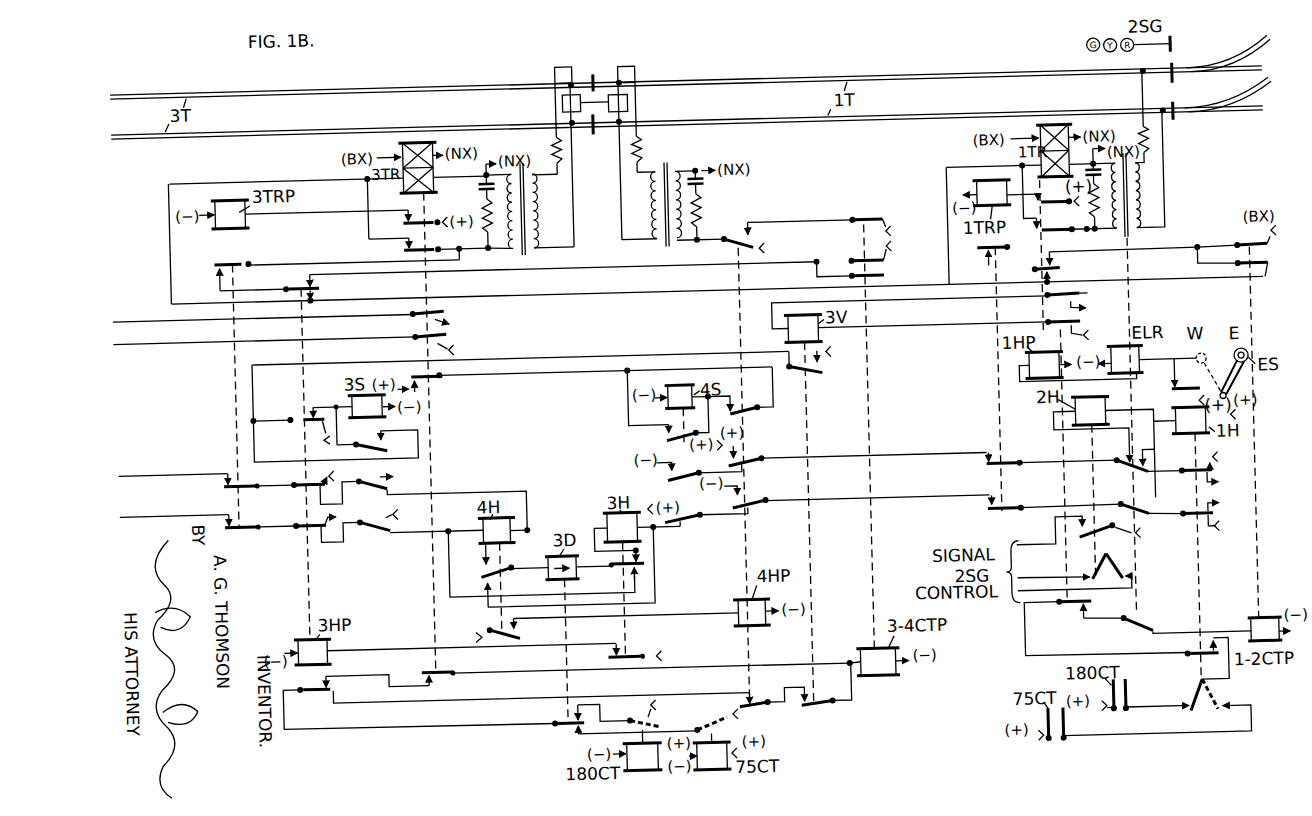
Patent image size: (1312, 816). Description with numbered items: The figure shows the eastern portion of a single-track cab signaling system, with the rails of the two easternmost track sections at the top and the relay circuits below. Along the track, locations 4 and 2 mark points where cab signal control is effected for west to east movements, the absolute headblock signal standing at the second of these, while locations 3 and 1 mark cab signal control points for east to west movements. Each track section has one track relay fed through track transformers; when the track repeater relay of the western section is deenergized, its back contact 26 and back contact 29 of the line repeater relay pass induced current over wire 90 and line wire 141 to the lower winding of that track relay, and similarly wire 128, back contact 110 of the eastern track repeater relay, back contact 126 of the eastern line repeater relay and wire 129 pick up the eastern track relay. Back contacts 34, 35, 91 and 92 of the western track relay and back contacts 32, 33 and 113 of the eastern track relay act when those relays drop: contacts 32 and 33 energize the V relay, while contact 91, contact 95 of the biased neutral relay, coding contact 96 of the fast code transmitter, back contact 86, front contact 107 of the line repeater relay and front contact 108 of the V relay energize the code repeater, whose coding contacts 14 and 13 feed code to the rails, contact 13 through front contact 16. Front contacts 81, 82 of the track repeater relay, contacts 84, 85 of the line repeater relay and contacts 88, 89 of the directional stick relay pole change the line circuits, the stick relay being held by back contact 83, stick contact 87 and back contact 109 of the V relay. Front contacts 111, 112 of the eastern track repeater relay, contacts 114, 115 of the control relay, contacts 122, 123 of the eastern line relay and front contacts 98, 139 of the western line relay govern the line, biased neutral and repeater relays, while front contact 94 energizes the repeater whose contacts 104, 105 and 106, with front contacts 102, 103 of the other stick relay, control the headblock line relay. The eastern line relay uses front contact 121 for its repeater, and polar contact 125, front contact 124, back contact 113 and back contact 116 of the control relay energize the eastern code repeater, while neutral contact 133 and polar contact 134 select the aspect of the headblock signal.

The cab signal control location 1 is at (1182, 132).
The cab signal control location 2 is at (1184, 82).
The cab signal control location 3 is at (596, 136).
The cab signal control location 4 is at (594, 72).
The coding contact 13 is at (887, 217).
The coding contact 14 is at (870, 258).
The front contact of relay 4HP 16 is at (742, 243).
The back contact of track repeater relay 3TRP 26 is at (240, 266).
The contact of line repeater relay 3HP 29 is at (292, 285).
The back contact of track relay 1TR 32 is at (1078, 301).
The back contact of track relay 1TR 33 is at (1049, 331).
The back contact of track relay 3TR 34 is at (416, 313).
The back contact of track relay 3TR 35 is at (418, 336).
The front contact of relay 3TRP 81 is at (238, 472).
The front contact of relay 3TRP 82 is at (193, 517).
The contact of relay 3HP 83 is at (303, 412).
The contact of repeater relay 3HP 84 is at (317, 483).
The contact of repeater relay 3HP 85 is at (322, 521).
The back contact of relay 3HP 86 is at (516, 698).
The stick contact of relay 3S 87 is at (365, 437).
The contact of relay 3S 88 is at (437, 497).
The contact of relay 3S 89 is at (370, 526).
The wire 90 is at (305, 256).
The back contact of relay 3TR 91 is at (417, 666).
The back contact of relay 3TR 92 is at (436, 376).
The front contact of relay 4H 94 is at (496, 635).
The contact of relay 3D 95 is at (616, 714).
The coding contact of code transmitter 180CT 96 is at (650, 709).
The front contact of relay 3H 98 is at (610, 567).
The front contact of relay 4S 102 is at (704, 466).
The front contact of relay 4S 103 is at (706, 508).
The front contact of relay 4HP 104 is at (751, 390).
The front contact of relay 4HP 105 is at (857, 447).
The front contact of relay 4HP 106 is at (861, 488).
The front contact of relay 4HP 107 is at (768, 697).
The front contact of relay 3V 108 is at (826, 684).
The back contact of relay 3V 109 is at (820, 379).
The back contact of track repeater relay 1TRP 110 is at (982, 257).
The front contact of relay 1TRP 111 is at (1051, 450).
The front contact of relay 1TRP 112 is at (1054, 495).
The back contact of track relay 1TR 113 is at (1056, 615).
The contact of control relay ELR 114 is at (1137, 455).
The contact of control relay ELR 115 is at (1139, 497).
The back contact of relay ELR 116 is at (1185, 616).
The front contact of relay 1H 121 is at (1182, 373).
The contact of relay 1H 122 is at (1203, 467).
The contact of relay 1H 123 is at (1205, 512).
The front contact of relay 1H 124 is at (1179, 665).
The polar contact of relay 1H 125 is at (1157, 699).
The back contact of relay 1HP 126 is at (1034, 267).
The wire 128 is at (1062, 234).
The wire 129 is at (952, 179).
The neutral contact of relay 2H 133 is at (1092, 524).
The polar contact of relay 2H 134 is at (1077, 561).
The front contact of relay 3H 139 is at (631, 652).
The line wire 141 is at (174, 252).